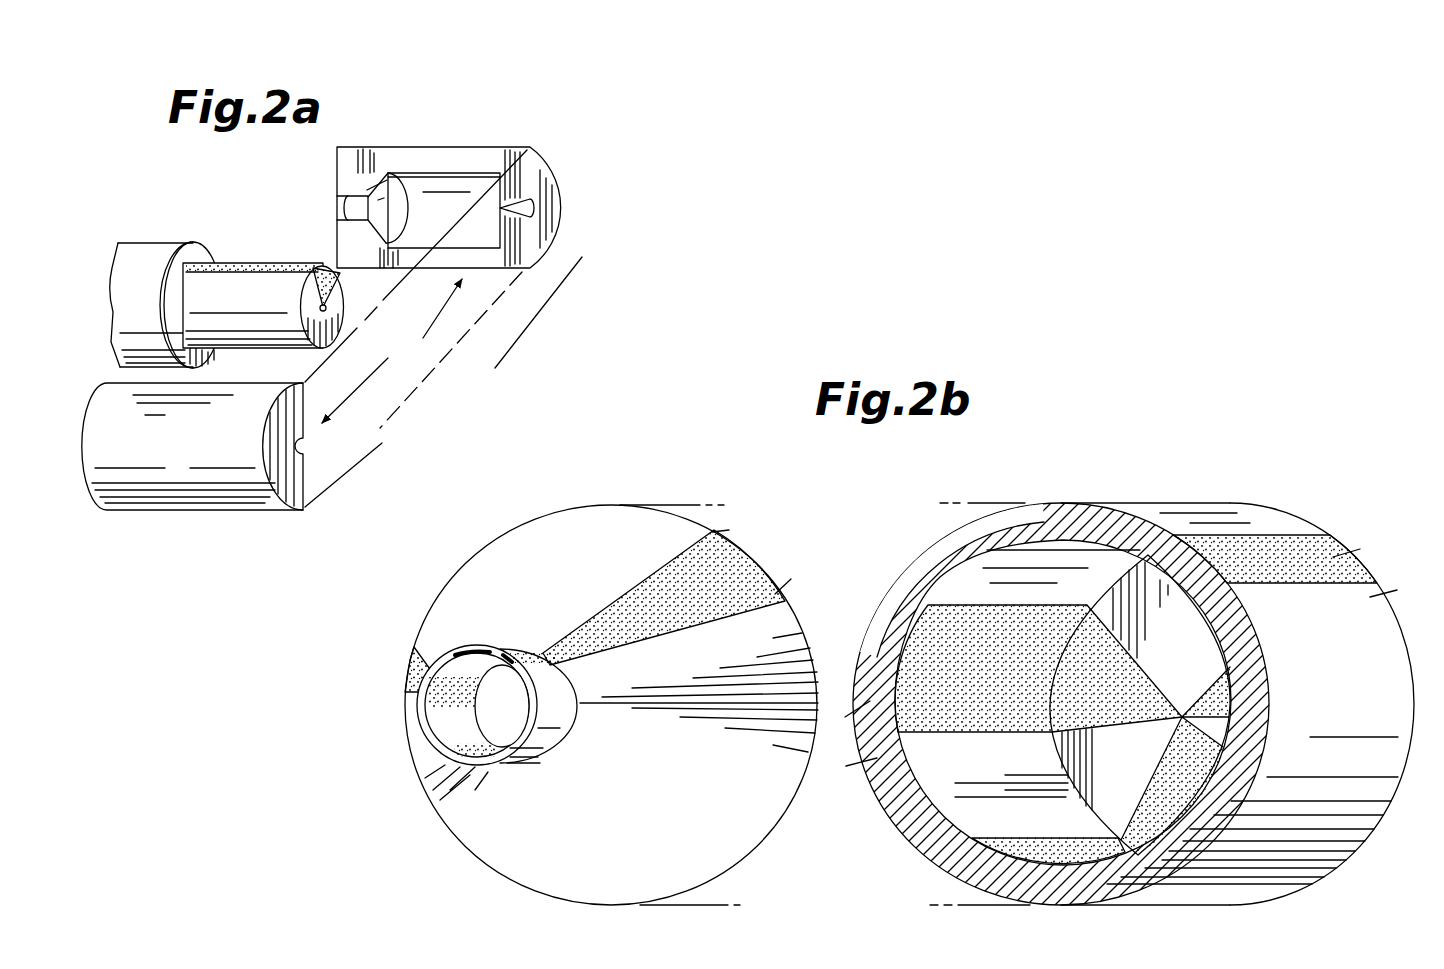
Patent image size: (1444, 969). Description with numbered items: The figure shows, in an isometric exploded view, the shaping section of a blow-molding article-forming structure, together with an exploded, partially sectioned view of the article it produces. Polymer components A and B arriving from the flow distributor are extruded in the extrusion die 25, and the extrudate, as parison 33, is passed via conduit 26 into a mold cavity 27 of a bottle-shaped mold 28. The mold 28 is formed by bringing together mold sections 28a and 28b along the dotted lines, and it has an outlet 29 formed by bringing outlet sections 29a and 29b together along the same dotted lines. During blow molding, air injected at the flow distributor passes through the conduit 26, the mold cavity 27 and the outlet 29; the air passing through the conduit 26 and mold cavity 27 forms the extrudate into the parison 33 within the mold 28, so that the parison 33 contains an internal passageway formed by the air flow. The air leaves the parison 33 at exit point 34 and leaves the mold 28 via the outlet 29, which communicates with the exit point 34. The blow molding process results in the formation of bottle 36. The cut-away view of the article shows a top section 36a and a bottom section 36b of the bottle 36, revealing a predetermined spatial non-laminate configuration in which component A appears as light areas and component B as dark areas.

In FIG. 2A, the extrusion die 25 is at (196, 243).
In FIG. 2A, the conduit 26 is at (346, 203).
In FIG. 2A, the mold cavity 27 is at (437, 186).
In FIG. 2A, the bottle-shaped mold 28 is at (428, 443).
In FIG. 2A, the mold section 28a is at (180, 497).
In FIG. 2A, the mold section 28b is at (537, 170).
In FIG. 2A, the outlet 29 is at (392, 351).
In FIG. 2A, the outlet section 29a is at (302, 446).
In FIG. 2A, the outlet section 29b is at (547, 224).
In FIG. 2A, the parison 33 is at (255, 287).
In FIG. 2A, the exit point 34 is at (323, 296).
In FIG. 2B, the bottle 36 is at (898, 517).
In FIG. 2B, the top section 36a is at (566, 505).
In FIG. 2B, the bottom section 36b is at (1043, 503).